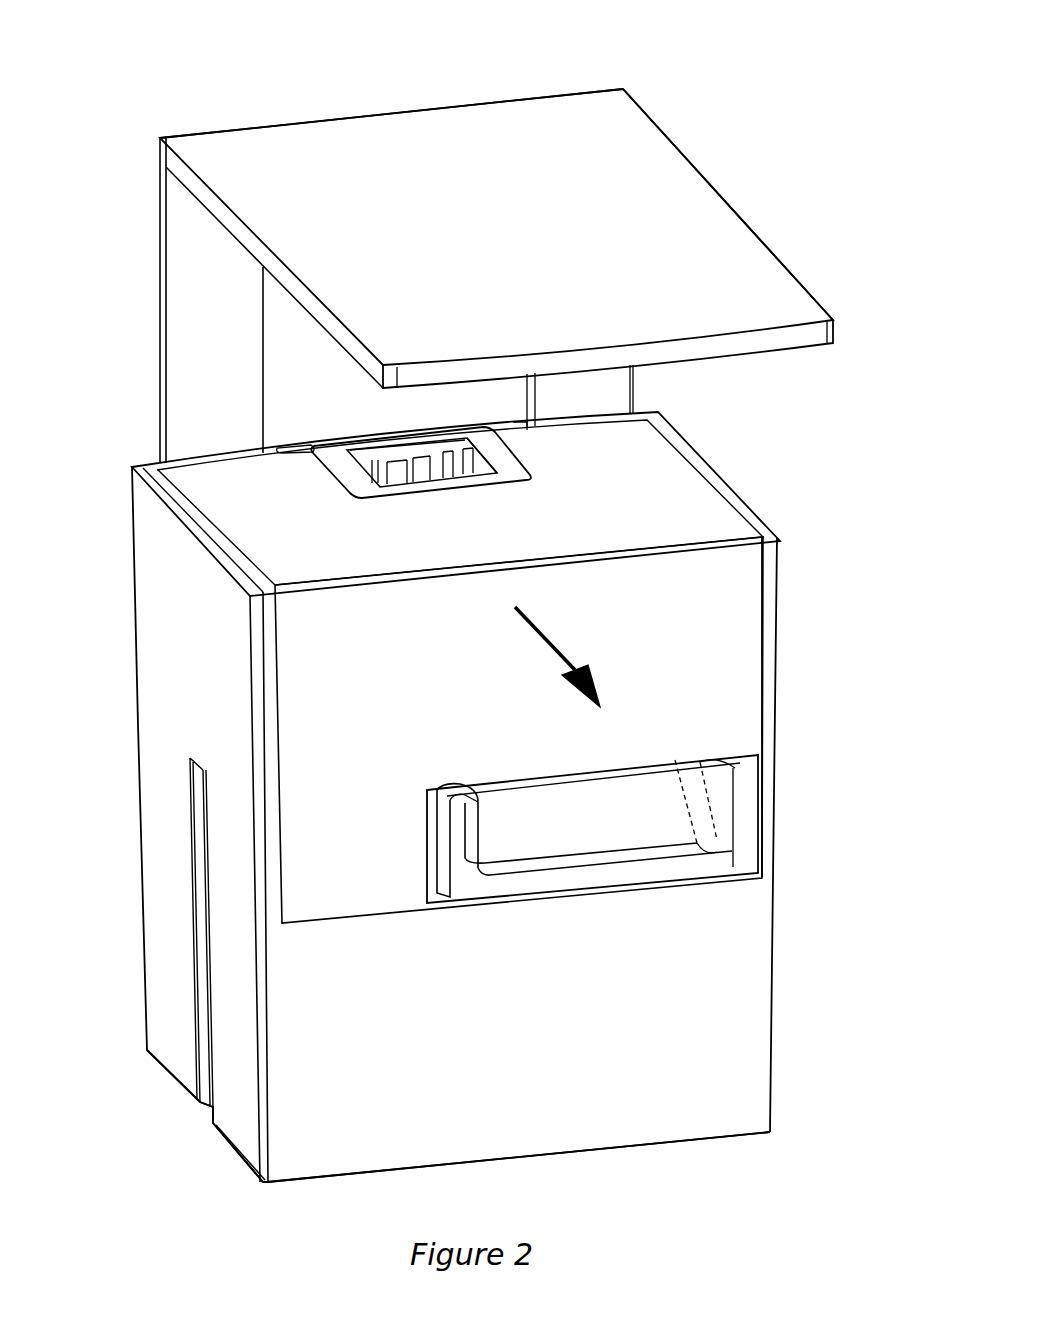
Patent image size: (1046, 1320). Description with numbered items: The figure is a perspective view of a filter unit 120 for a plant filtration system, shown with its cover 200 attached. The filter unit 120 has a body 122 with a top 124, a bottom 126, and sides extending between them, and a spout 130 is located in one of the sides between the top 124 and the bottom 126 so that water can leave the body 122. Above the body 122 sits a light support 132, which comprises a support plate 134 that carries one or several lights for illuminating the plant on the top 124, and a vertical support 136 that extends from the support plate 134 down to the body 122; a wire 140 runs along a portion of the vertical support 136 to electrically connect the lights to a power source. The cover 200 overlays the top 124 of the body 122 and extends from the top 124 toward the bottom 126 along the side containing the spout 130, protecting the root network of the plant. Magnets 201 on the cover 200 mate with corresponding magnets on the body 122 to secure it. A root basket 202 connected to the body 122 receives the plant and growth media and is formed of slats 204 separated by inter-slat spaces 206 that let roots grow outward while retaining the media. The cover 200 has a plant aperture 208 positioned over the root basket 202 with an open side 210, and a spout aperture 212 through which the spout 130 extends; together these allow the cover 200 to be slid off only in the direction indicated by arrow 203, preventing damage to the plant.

The filter unit 120 is at (727, 92).
The body 122 is at (138, 672).
The top 124 is at (133, 465).
The bottom 126 is at (243, 1162).
The spout 130 is at (670, 826).
The light support 132 is at (522, 98).
The support plate 134 is at (745, 215).
The vertical support 136 is at (160, 290).
The wire 140 is at (208, 1108).
The cover 200 is at (720, 522).
The magnets 201 is at (288, 445).
The root basket 202 is at (335, 447).
The arrow 203 is at (562, 653).
The slats 204 is at (450, 470).
The inter-slat spaces 206 is at (427, 473).
The plant aperture 208 is at (535, 455).
The open side 210 is at (428, 428).
The spout aperture 212 is at (625, 791).